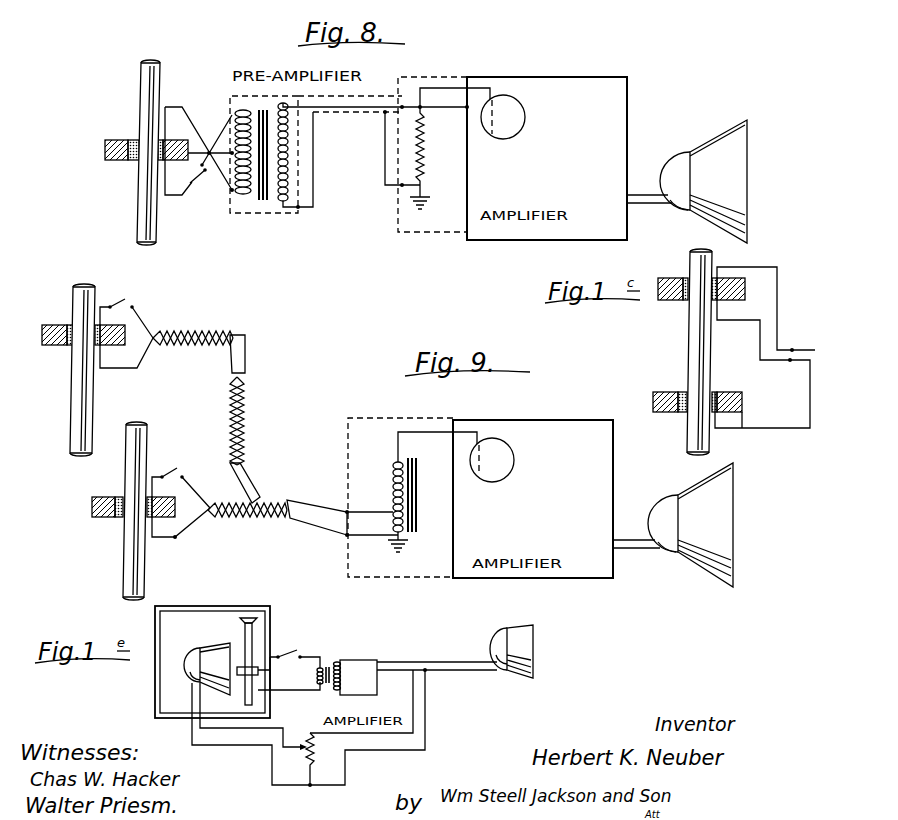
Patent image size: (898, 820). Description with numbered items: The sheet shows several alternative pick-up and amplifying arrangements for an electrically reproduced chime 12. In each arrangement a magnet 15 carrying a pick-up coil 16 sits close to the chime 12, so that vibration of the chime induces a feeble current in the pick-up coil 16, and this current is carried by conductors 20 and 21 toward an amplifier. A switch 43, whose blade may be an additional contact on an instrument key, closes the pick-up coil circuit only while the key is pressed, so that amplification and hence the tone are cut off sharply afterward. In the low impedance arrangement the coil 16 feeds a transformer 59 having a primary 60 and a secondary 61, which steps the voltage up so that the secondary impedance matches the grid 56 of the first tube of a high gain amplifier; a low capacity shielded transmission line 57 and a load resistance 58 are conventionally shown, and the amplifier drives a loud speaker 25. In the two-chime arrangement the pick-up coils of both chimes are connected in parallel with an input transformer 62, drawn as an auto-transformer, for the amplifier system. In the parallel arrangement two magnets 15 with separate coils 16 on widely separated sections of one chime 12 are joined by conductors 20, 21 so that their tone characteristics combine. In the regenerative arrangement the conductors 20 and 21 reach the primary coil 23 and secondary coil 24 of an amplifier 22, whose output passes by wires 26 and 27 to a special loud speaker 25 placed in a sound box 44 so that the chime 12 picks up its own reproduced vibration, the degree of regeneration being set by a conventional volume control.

In FIG. 8, the chime 12 is at (147, 94).
In FIG. 9, the chime 12 is at (77, 303).
In FIG. 1C, the chime 12 is at (705, 370).
In FIG. 1E, the chime 12 is at (253, 641).
In FIG. 8, the magnet 15 is at (105, 154).
In FIG. 9, the magnet 15 is at (53, 346).
In FIG. 1C, the magnet 15 is at (658, 301).
In FIG. 8, the pick-up coil 16 is at (129, 160).
In FIG. 1C, the pick-up coil 16 is at (685, 301).
In FIG. 8, the conductor 20 is at (182, 107).
In FIG. 1C, the conductor 20 is at (812, 350).
In FIG. 1E, the conductor 20 is at (310, 657).
In FIG. 8, the conductor 21 is at (180, 195).
In FIG. 1C, the conductor 21 is at (812, 430).
In FIG. 1E, the conductor 21 is at (303, 690).
In FIG. 8, the switch 43 is at (204, 178).
In FIG. 9, the switch 43 is at (120, 300).
In FIG. 1E, the switch 43 is at (299, 652).
In FIG. 8, the primary 60 is at (248, 195).
In FIG. 8, the transformer 59 is at (265, 203).
In FIG. 8, the secondary 61 is at (288, 212).
In FIG. 8, the shielded transmission line 57 is at (358, 110).
In FIG. 8, the load resistance 58 is at (425, 167).
In FIG. 8, the grid 56 is at (497, 140).
In FIG. 9, the grid 56 is at (492, 482).
In FIG. 8, the loud speaker 25 is at (733, 157).
In FIG. 9, the loud speaker 25 is at (717, 503).
In FIG. 1E, the loud speaker 25 is at (217, 657).
In FIG. 9, the input transformer 62 is at (415, 504).
In FIG. 1E, the sound box 44 is at (157, 668).
In FIG. 1E, the primary coil 23 is at (317, 674).
In FIG. 1E, the secondary coil 24 is at (343, 663).
In FIG. 1E, the amplifier 22 is at (372, 661).
In FIG. 1E, the wire 26 is at (460, 662).
In FIG. 1E, the wire 27 is at (463, 672).